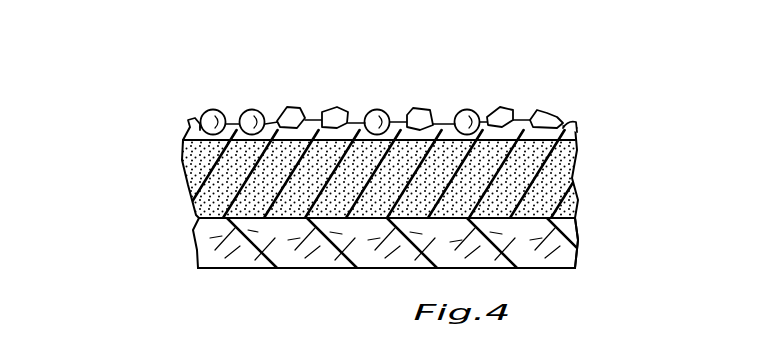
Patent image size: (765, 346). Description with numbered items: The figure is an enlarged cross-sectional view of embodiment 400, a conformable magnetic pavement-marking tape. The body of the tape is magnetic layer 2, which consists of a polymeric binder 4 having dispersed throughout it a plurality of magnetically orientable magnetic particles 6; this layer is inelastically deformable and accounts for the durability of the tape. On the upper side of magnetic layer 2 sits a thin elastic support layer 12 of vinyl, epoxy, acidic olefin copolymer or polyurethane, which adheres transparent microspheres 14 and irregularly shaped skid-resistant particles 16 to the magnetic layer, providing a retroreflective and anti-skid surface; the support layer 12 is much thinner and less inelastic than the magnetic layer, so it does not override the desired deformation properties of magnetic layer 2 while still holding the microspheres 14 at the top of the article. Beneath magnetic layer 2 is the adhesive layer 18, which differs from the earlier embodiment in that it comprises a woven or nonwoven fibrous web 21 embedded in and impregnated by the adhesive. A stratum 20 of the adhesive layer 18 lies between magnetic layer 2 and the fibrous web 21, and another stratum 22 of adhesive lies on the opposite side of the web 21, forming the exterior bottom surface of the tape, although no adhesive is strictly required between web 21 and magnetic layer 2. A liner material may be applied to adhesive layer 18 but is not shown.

The embodiment of conformable magnetic pavement-marking tape 400 is at (151, 214).
The magnetic layer 2 is at (181, 156).
The polymeric binder layer 4 is at (576, 173).
The magnetic particles 6 is at (439, 153).
The elastic support layer 12 is at (524, 108).
The transparent microspheres 14 is at (249, 109).
The irregularly shaped skid-resistant particles 16 is at (334, 109).
The adhesive layer 18 is at (345, 272).
The stratum of the adhesive layer 20 is at (573, 227).
The fibrous web 21 is at (223, 269).
The stratum of adhesive 22 is at (571, 260).